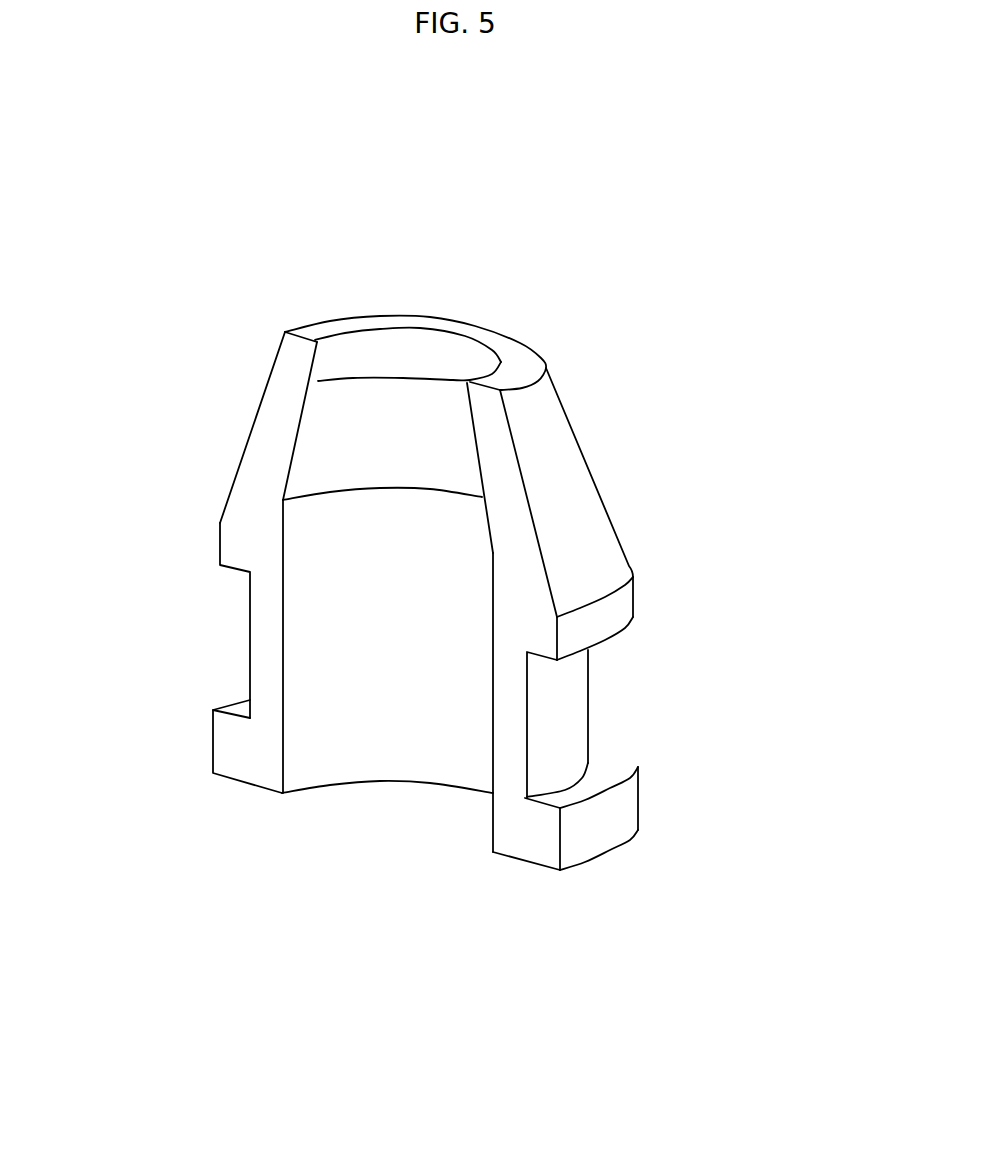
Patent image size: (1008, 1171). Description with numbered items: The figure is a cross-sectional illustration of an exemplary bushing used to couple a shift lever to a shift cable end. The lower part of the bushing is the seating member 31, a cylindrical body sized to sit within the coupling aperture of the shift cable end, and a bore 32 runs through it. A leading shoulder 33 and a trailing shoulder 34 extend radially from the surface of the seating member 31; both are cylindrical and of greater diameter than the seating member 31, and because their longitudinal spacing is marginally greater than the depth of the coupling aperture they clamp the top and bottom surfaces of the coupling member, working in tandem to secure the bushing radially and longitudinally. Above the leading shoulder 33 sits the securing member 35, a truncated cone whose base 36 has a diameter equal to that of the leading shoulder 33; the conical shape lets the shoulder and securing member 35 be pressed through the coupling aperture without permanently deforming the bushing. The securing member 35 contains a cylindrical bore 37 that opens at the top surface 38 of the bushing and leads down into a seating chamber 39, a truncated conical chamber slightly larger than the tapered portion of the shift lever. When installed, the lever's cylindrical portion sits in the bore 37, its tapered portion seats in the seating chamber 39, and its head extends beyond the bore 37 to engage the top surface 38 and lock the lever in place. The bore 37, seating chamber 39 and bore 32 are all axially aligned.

The seating member 31 is at (563, 723).
The bore 32 is at (381, 732).
The leading shoulder 33 is at (620, 627).
The trailing shoulder 34 is at (595, 833).
The securing member 35 is at (562, 460).
The base 36 is at (624, 592).
The bore 37 is at (395, 358).
The top surface 38 is at (525, 353).
The seating chamber 39 is at (362, 450).